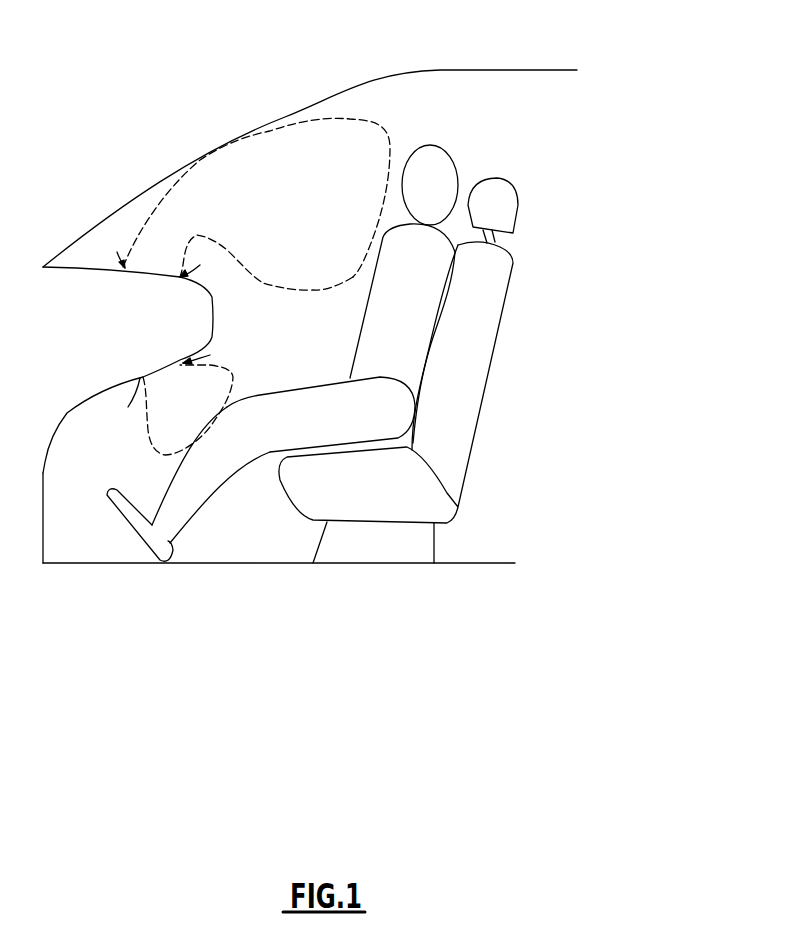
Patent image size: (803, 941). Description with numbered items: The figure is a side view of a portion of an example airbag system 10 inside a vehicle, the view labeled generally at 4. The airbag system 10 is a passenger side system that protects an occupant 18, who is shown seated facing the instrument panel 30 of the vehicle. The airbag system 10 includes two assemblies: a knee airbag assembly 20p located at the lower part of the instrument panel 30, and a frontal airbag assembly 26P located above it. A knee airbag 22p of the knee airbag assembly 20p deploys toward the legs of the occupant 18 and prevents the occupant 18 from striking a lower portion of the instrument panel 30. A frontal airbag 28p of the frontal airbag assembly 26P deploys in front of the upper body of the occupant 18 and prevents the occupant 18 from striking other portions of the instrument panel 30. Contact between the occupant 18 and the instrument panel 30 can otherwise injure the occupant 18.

The vehicle 4 is at (622, 53).
The airbag system 10 is at (257, 118).
The occupant 18 is at (460, 170).
The knee airbag assembly 20p is at (138, 423).
The knee airbag 22p is at (113, 510).
The frontal airbag assembly 26P is at (388, 128).
The frontal airbag 28p is at (260, 247).
The instrument panel 30 is at (206, 339).